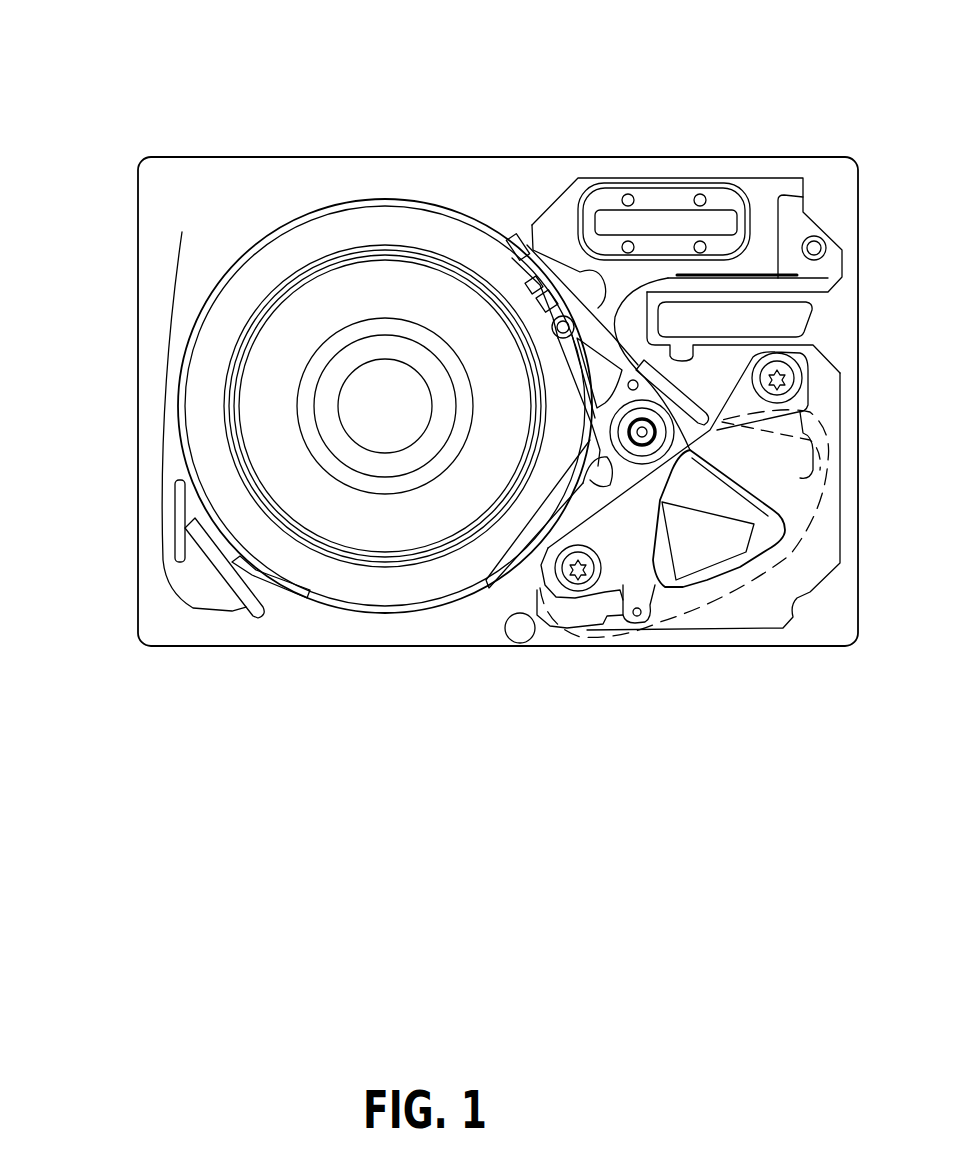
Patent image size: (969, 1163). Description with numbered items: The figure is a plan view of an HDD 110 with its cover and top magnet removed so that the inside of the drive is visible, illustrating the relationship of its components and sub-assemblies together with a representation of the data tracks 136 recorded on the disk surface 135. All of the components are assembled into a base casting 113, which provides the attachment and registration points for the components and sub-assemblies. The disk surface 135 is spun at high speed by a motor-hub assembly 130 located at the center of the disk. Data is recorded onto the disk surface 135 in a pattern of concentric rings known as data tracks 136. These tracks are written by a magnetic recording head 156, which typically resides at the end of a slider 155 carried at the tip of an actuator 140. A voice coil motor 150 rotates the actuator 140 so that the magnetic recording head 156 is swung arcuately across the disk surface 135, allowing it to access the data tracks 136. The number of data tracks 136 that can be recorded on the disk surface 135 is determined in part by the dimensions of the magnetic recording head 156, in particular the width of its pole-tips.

The HDD 110 is at (159, 145).
The base casting 113 is at (155, 366).
The motor-hub assembly 130 is at (387, 397).
The disk surface 135 is at (315, 242).
The data tracks 136 is at (230, 455).
The actuator 140 is at (565, 508).
The voice coil motor 150 is at (692, 602).
The slider 155 is at (512, 243).
The magnetic recording head 156 is at (510, 243).